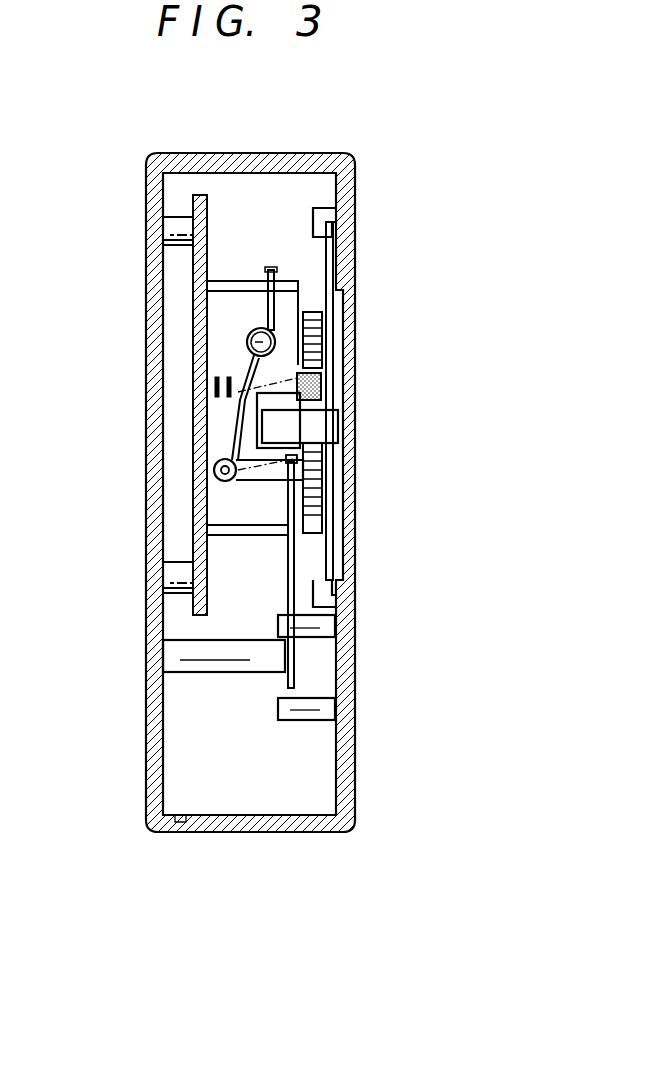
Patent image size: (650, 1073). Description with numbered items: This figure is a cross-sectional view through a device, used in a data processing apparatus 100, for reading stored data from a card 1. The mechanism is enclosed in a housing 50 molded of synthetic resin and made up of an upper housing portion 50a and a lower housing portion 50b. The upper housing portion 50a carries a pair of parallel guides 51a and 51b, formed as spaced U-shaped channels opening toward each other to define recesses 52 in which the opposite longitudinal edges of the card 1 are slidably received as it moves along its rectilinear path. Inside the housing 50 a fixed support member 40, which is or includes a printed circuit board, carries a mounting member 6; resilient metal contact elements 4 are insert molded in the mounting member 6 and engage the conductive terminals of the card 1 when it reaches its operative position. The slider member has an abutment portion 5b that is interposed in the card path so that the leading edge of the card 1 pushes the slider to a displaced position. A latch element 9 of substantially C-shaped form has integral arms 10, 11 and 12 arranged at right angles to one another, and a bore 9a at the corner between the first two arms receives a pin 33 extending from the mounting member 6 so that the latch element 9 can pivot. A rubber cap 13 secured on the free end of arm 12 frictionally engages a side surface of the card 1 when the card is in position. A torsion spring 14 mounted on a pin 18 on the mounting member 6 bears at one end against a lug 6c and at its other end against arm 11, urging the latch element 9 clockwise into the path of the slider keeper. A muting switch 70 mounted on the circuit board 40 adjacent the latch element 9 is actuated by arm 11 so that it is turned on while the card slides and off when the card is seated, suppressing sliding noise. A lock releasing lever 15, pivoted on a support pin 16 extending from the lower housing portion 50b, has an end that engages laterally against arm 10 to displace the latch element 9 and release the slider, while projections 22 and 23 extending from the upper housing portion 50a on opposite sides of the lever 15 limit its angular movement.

The data processing apparatus 100 is at (386, 126).
The card 1 is at (350, 290).
The housing 50 is at (255, 876).
The upper housing portion 50a is at (265, 828).
The lower housing portion 50b is at (207, 851).
The fixed support member 40 is at (207, 203).
The mounting member 6 is at (238, 294).
The lug 6c is at (272, 280).
The contact elements 4 is at (301, 310).
The torsion spring 14 is at (240, 298).
The pin 18 is at (247, 342).
The arm 11 is at (238, 401).
The muting switch 70 is at (213, 385).
The arm 12 is at (325, 372).
The rubber cap 13 is at (325, 400).
The abutment portion 5b is at (330, 434).
The latch element 9 is at (195, 477).
The bore 9a is at (220, 468).
The pin 33 is at (240, 478).
The arm 10 is at (288, 476).
The lever 15 is at (290, 592).
The support pin 16 is at (244, 665).
The projection 22 is at (325, 636).
The projection 23 is at (300, 720).
The guide 51a is at (340, 203).
The guide 51b is at (345, 603).
The recesses 52 is at (335, 234).